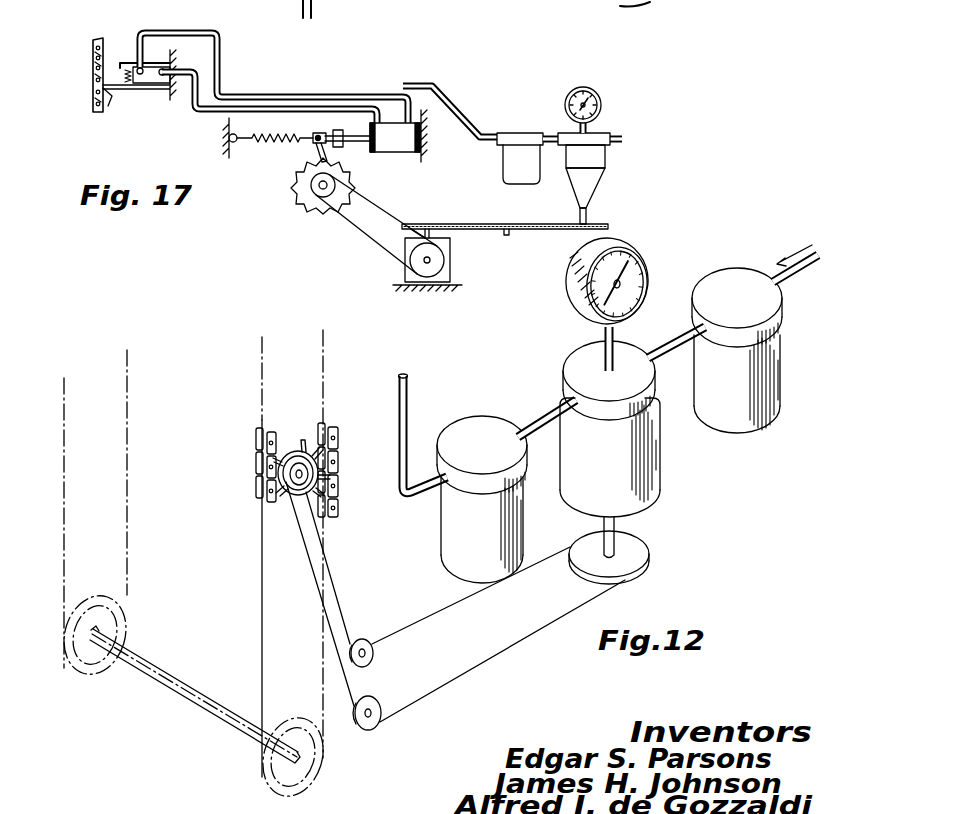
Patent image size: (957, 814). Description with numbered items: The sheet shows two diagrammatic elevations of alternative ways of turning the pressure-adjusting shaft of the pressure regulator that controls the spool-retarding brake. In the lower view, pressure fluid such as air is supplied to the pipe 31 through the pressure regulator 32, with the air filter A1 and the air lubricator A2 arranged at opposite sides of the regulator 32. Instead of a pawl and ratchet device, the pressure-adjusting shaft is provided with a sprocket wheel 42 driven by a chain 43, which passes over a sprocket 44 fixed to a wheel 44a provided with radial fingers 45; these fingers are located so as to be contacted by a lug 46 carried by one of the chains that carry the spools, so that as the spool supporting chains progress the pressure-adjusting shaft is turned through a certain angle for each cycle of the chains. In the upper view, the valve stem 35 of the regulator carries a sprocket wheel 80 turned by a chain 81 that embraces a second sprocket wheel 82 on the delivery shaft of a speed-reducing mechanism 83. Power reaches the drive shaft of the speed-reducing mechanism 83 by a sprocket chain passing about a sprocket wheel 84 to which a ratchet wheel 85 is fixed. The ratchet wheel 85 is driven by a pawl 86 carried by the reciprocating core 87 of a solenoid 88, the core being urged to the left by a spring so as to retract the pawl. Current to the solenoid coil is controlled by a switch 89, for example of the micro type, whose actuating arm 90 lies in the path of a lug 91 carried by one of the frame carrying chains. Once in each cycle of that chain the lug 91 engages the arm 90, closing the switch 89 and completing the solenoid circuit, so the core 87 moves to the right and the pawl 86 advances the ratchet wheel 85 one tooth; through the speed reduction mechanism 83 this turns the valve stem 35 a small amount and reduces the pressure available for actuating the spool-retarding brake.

In FIG. 17, the switch 89 is at (130, 45).
In FIG. 17, the actuating arm 90 is at (140, 85).
In FIG. 17, the lug 91 is at (95, 89).
In FIG. 17, the solenoid 88 is at (400, 152).
In FIG. 17, the reciprocating core 87 is at (351, 143).
In FIG. 17, the pawl 86 is at (313, 146).
In FIG. 17, the ratchet wheel 85 is at (318, 168).
In FIG. 17, the sprocket wheel 84 is at (311, 190).
In FIG. 17, the speed-reducing mechanism 83 is at (391, 271).
In FIG. 17, the second sprocket wheel 82 is at (446, 210).
In FIG. 17, the chain 81 is at (511, 210).
In FIG. 17, the sprocket wheel 80 is at (571, 224).
In FIG. 17, the air lubricator A2 is at (508, 165).
In FIG. 12, the air lubricator A2 is at (445, 538).
In FIG. 17, the pressure regulator 32 is at (615, 171).
In FIG. 12, the pressure regulator 32 is at (668, 494).
In FIG. 17, the valve stem 35 is at (590, 212).
In FIG. 12, the valve stem 35 is at (612, 527).
In FIG. 12, the pipe 31 is at (407, 397).
In FIG. 12, the sprocket wheel 42 is at (640, 553).
In FIG. 12, the chain 43 is at (498, 658).
In FIG. 12, the sprocket 44 is at (292, 494).
In FIG. 12, the wheel 44a is at (303, 446).
In FIG. 12, the radial fingers 45 is at (300, 450).
In FIG. 12, the lug 46 is at (262, 483).
In FIG. 12, the air filter A1 is at (772, 398).